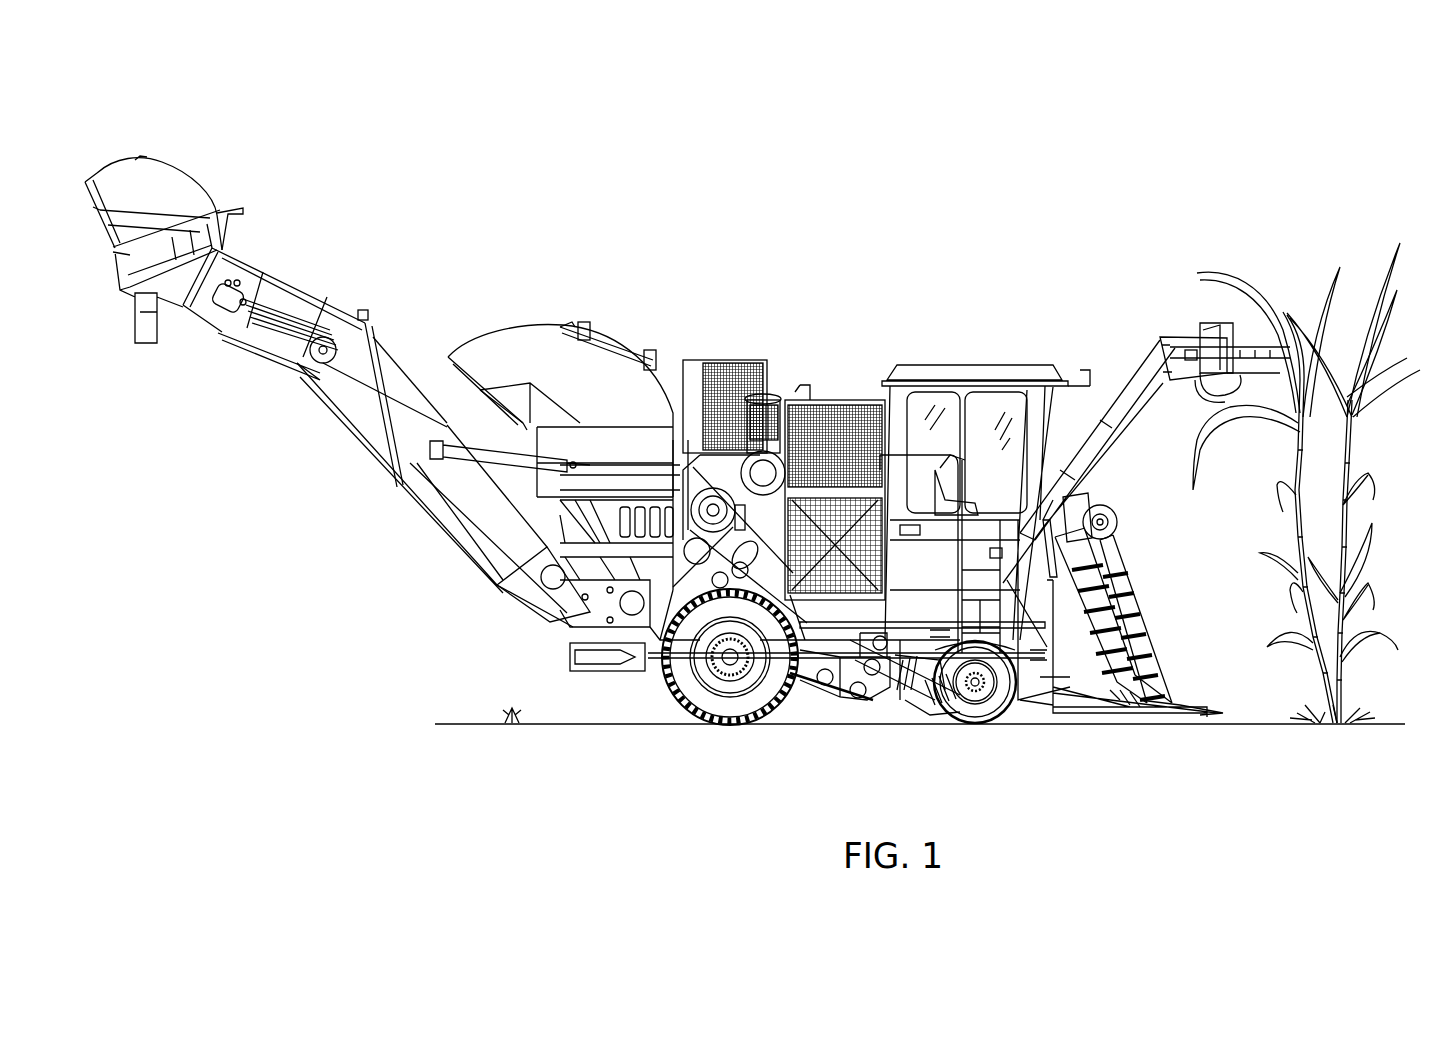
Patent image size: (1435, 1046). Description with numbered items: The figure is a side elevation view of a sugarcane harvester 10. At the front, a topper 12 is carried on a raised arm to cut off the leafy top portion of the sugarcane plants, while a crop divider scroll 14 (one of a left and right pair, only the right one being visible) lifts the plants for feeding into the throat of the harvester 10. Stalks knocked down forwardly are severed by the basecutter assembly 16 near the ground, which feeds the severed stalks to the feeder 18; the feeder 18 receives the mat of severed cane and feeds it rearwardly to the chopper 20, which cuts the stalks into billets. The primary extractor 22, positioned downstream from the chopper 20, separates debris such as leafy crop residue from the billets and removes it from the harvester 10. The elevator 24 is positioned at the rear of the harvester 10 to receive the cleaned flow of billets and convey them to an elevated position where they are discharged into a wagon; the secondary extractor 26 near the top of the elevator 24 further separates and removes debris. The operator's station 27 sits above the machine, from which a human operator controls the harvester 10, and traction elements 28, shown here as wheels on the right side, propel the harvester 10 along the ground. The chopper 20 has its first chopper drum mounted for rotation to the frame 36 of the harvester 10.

The sugarcane harvester 10 is at (1136, 132).
The topper 12 is at (1247, 352).
The crop divider scroll 14 is at (1102, 652).
The basecutter assembly 16 is at (907, 707).
The feeder 18 is at (773, 623).
The chopper 20 is at (650, 655).
The primary extractor 22 is at (515, 342).
The elevator 24 is at (392, 352).
The secondary extractor 26 is at (176, 178).
The operator's station 27 is at (967, 365).
The traction elements 28 is at (727, 703).
The frame 36 is at (817, 640).